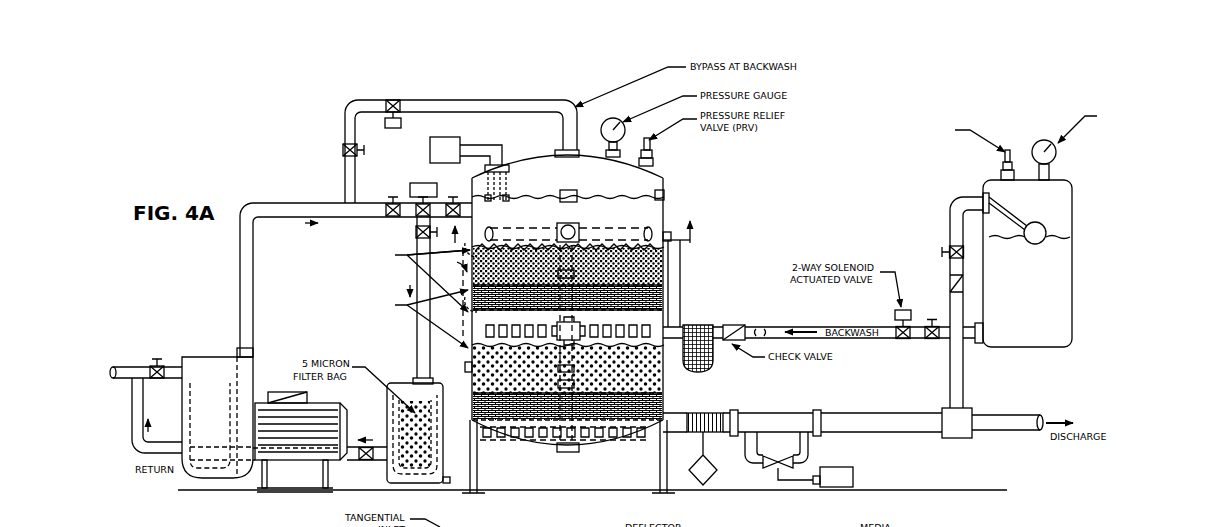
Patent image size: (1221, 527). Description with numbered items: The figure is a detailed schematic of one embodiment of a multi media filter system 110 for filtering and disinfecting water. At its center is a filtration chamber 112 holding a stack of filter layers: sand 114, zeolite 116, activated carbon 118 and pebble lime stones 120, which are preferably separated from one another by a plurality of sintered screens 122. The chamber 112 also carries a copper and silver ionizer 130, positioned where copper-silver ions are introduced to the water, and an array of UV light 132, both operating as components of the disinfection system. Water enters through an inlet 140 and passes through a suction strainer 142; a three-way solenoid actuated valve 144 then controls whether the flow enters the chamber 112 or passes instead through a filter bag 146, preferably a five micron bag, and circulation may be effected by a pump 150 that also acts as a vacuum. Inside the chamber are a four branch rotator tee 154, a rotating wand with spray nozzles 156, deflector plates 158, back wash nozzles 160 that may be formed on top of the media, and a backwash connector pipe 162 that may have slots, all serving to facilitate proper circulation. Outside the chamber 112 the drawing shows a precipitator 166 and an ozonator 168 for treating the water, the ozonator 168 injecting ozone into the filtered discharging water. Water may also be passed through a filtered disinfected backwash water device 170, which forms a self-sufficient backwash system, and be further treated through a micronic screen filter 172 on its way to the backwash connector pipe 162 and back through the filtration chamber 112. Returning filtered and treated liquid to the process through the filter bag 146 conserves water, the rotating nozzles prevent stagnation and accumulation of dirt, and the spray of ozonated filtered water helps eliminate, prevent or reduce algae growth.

The multi media filter system 110 is at (297, 85).
The filtration chamber 112 is at (530, 160).
The sand 114 is at (641, 275).
The zeolite 116 is at (656, 300).
The activated carbon 118 is at (667, 382).
The pebble lime stones 120 is at (667, 403).
The sintered screens 122 is at (468, 415).
The copper and silver ionizer 130 is at (487, 186).
The array of UV light 132 is at (548, 437).
The inlet 140 is at (108, 370).
The suction strainer 142 is at (207, 355).
The three-way solenoid actuated valve 144 is at (405, 192).
The filter bag 146 is at (320, 438).
The pump 150 is at (298, 453).
The four branch rotator tee 154 is at (580, 225).
The rotating wand with spray nozzles 156 is at (641, 228).
The deflector plates 158 is at (578, 188).
The back wash nozzles 160 is at (667, 237).
The backwash connector pipe 162 is at (651, 323).
The precipitator 166 is at (720, 472).
The ozonator 168 is at (831, 459).
The filtered disinfected backwash water device 170 is at (1023, 228).
The micronic screen filter 172 is at (715, 368).